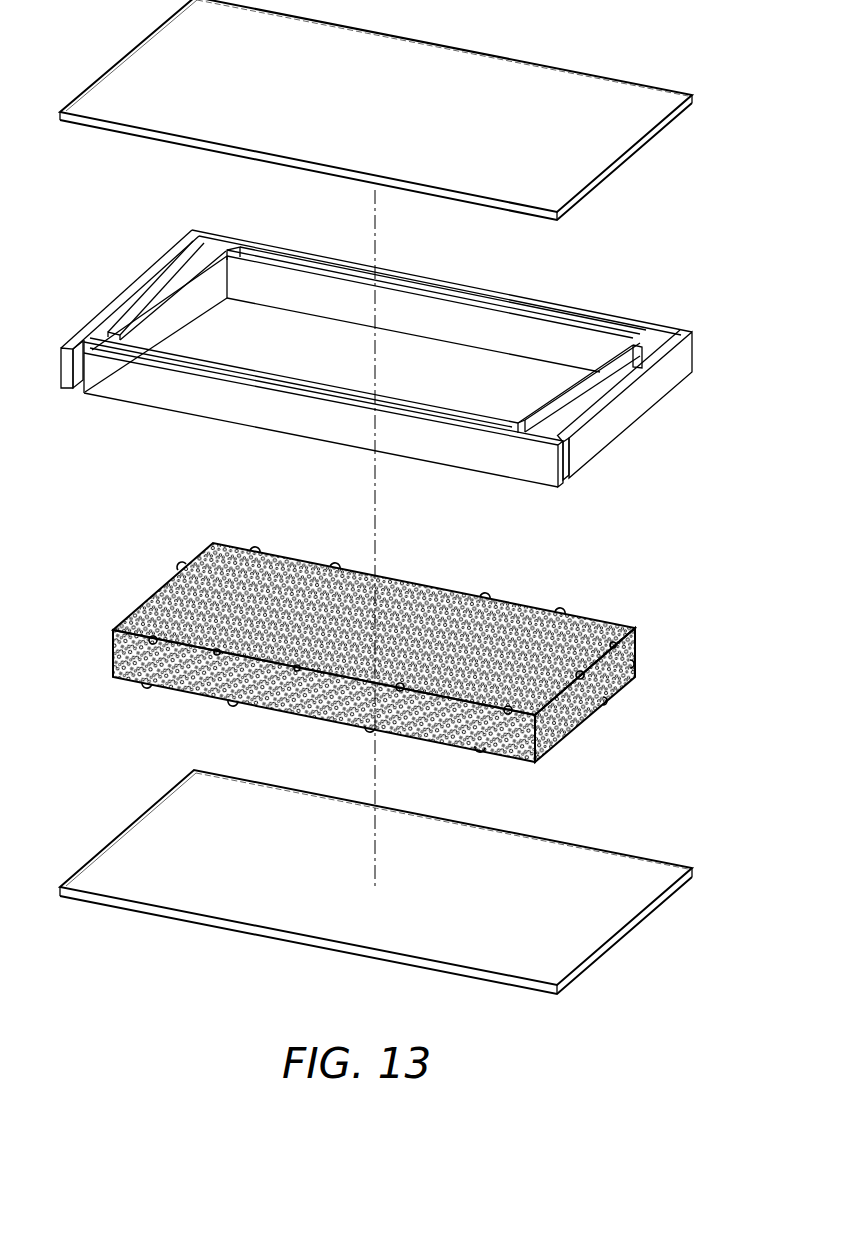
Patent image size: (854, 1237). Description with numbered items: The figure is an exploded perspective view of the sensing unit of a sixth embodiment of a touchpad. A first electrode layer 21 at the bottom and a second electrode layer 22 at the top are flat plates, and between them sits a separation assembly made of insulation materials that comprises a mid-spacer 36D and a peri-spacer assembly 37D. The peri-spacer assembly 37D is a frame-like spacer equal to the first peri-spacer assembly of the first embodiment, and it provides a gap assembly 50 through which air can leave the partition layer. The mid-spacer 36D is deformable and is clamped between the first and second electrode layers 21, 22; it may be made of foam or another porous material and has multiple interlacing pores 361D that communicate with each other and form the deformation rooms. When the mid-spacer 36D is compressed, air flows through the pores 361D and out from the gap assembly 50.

The second electrode layer 22 is at (95, 81).
The first electrode layer 21 is at (95, 857).
The gap assembly 50 is at (401, 358).
The peri-spacer assembly 37D is at (632, 441).
The mid-spacer 36D is at (365, 647).
The interlacing pores 361D is at (183, 571).